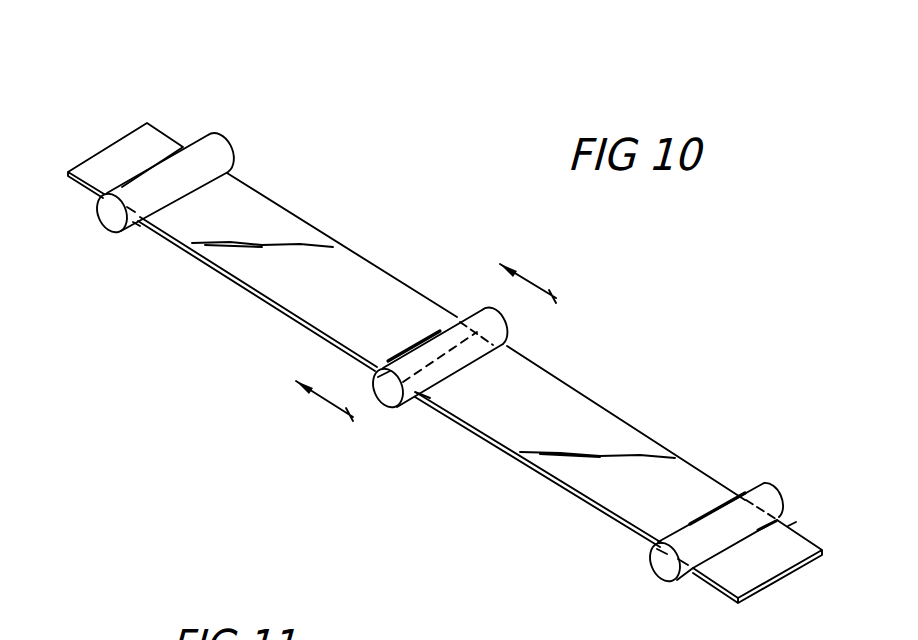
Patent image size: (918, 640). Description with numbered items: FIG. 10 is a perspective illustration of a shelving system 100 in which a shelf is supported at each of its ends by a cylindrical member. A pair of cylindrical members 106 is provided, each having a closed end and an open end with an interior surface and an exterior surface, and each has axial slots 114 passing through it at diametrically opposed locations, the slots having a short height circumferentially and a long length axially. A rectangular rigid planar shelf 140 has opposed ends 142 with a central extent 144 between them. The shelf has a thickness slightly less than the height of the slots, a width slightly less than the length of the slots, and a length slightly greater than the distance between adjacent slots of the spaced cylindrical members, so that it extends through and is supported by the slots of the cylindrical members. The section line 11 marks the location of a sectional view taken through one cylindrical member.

The shelving system 100 is at (652, 327).
The cylindrical member 106 is at (215, 153).
The axial slot 114 is at (137, 226).
The shelf 140 is at (300, 222).
The opposed end 142 is at (116, 145).
The central extent 144 is at (272, 262).
The section line 11- 11 is at (452, 364).